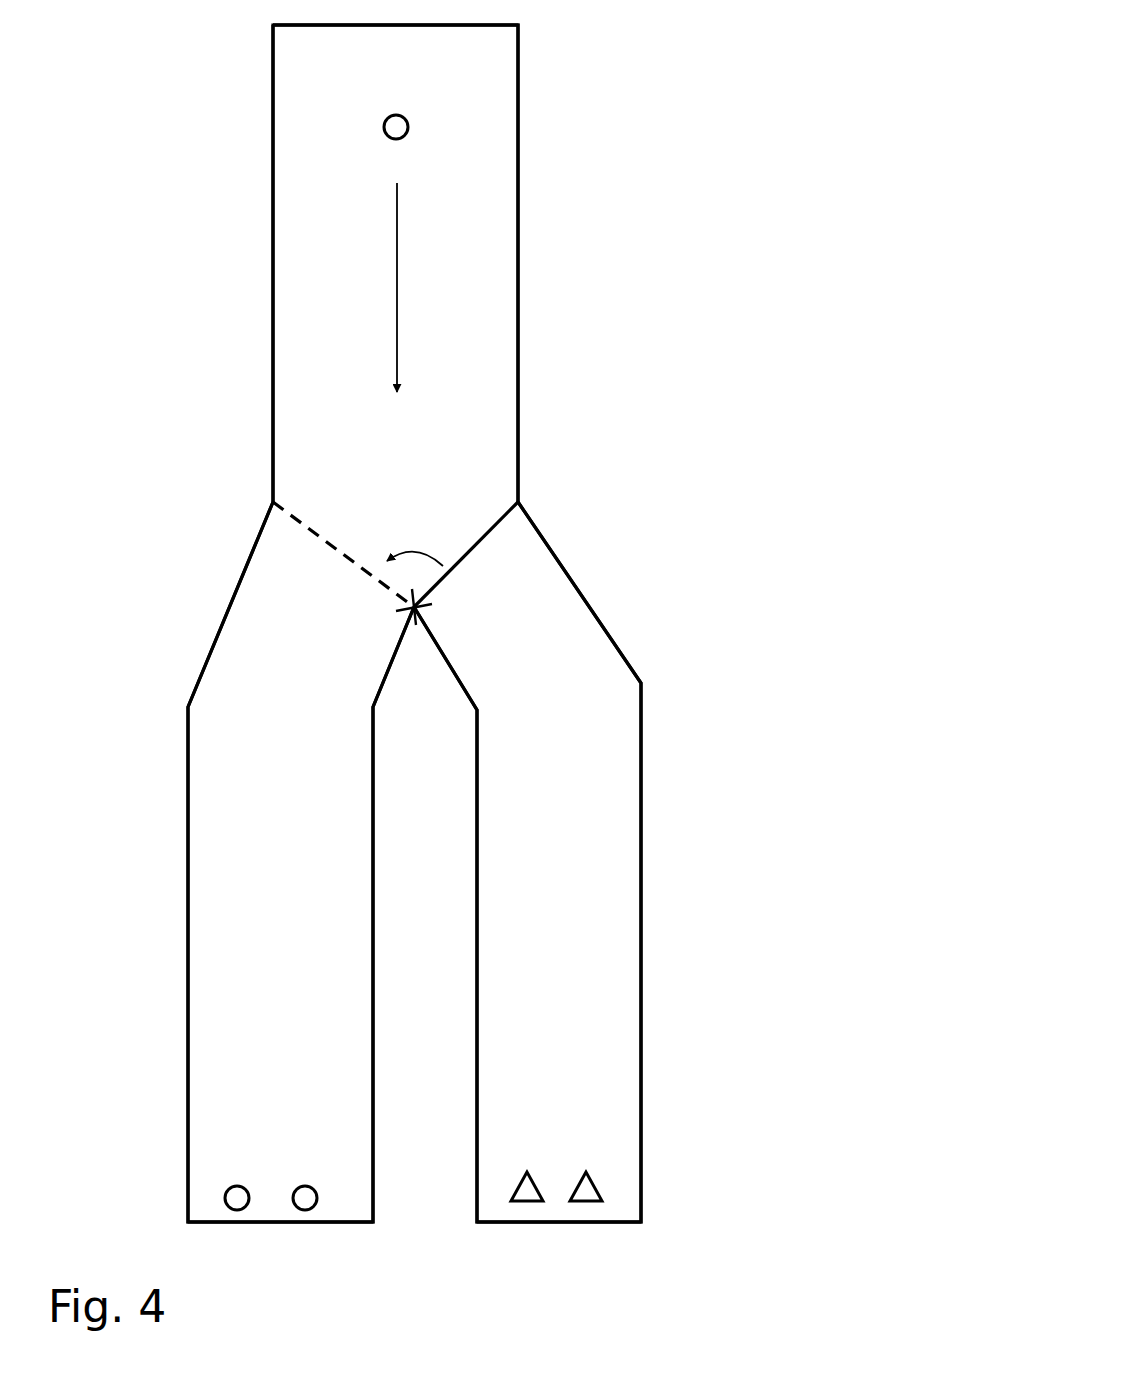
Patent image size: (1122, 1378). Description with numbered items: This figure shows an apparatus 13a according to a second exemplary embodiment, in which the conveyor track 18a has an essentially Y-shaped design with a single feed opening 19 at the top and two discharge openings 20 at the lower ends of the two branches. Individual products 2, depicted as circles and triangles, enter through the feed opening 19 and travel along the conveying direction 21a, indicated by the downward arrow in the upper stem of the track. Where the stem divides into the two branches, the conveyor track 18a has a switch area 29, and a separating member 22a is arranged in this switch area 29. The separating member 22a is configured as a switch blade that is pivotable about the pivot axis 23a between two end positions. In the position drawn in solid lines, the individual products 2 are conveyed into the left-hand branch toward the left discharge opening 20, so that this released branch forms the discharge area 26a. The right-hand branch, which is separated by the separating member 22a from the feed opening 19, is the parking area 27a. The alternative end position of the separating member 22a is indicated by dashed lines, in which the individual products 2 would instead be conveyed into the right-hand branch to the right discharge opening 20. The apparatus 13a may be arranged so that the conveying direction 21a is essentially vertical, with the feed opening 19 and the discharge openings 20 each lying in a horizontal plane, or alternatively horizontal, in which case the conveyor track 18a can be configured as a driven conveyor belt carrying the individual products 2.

The individual product 2 is at (406, 127).
The apparatus 13a is at (758, 443).
The conveyor track 18a is at (523, 359).
The feed opening 19 is at (487, 25).
The discharge opening 20 is at (240, 1222).
The conveying direction 21a is at (397, 254).
The separating member 22a is at (467, 557).
The pivot axis 23a is at (414, 607).
The discharge area 26a is at (182, 947).
The parking area 27a is at (647, 951).
The switch area 29 is at (402, 537).